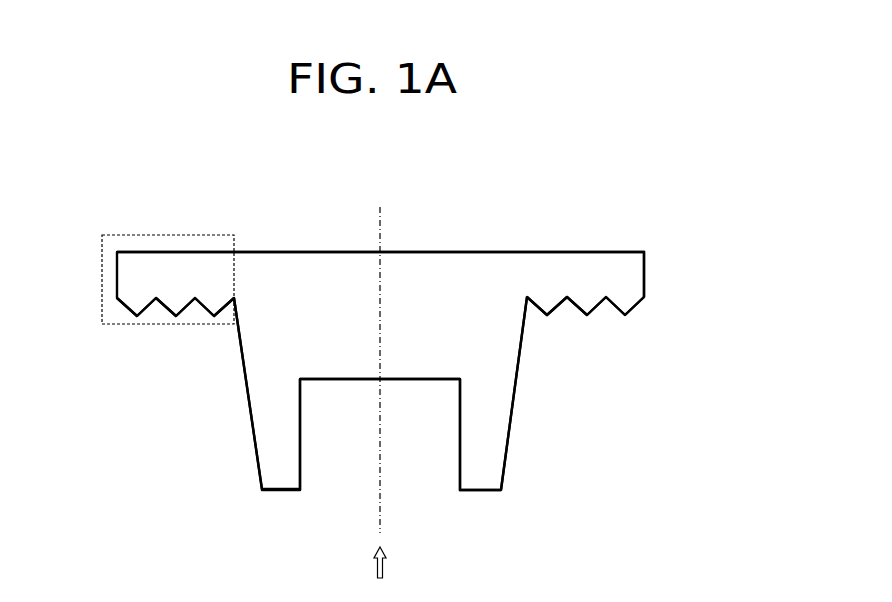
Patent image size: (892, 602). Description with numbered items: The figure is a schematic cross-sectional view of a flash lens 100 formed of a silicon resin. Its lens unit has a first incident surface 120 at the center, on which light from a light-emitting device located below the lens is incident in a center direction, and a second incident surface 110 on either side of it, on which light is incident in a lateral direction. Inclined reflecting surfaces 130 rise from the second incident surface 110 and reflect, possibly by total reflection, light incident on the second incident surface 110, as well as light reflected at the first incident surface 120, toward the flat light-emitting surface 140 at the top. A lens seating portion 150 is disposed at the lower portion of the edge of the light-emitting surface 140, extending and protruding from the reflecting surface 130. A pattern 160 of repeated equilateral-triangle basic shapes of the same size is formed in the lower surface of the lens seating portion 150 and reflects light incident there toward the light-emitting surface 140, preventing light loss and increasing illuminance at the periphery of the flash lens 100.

The flash lens 100 is at (647, 210).
The second incident surface 110 is at (302, 455).
The first incident surface 120 is at (355, 380).
The reflecting surface 130 is at (243, 393).
The light-emitting surface 140 is at (457, 251).
The lens seating portion 150 is at (168, 235).
The pattern 160 is at (125, 310).